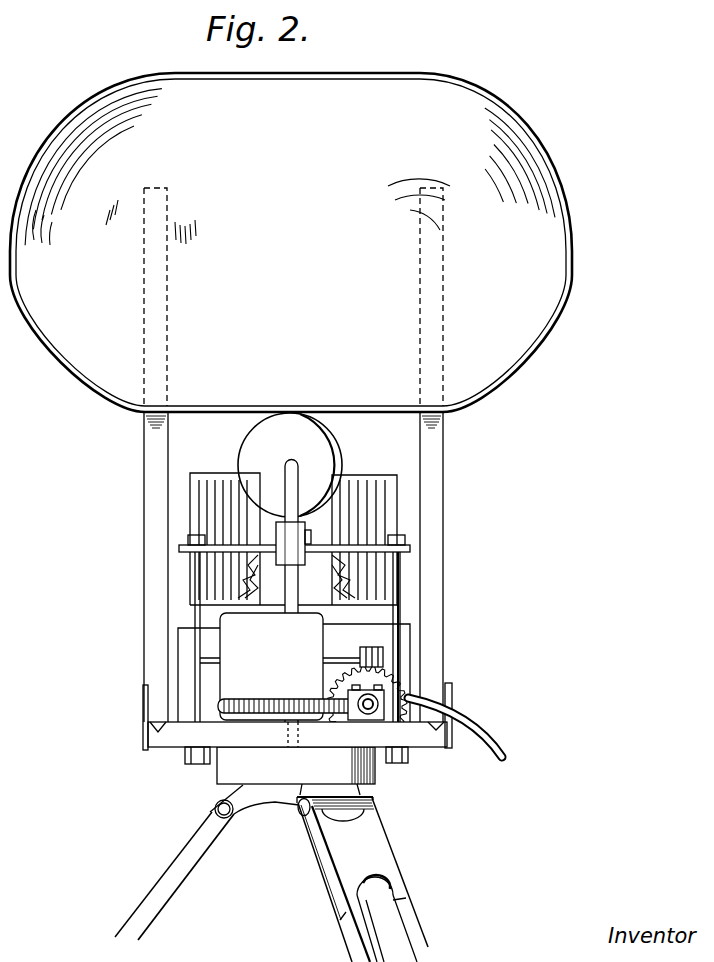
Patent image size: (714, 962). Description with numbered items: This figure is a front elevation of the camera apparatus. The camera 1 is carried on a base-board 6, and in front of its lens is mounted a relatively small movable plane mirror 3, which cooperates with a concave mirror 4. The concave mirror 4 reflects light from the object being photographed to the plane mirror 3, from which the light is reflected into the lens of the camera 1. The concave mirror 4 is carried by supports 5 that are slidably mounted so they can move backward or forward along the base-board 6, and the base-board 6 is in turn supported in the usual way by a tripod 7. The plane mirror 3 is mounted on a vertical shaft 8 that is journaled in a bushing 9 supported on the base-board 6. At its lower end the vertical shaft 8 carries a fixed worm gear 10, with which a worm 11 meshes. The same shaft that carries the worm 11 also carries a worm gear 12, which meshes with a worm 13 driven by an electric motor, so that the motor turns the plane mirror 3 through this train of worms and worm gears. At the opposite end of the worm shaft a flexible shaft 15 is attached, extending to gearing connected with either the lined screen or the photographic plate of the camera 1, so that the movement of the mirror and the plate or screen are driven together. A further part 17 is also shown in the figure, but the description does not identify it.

The camera 1 is at (375, 501).
The plane mirror 3 is at (342, 441).
The concave mirror 4 is at (540, 252).
The supports 5 is at (150, 553).
The base-board 6 is at (165, 737).
The tripod 7 is at (370, 833).
The vertical shaft 8 is at (288, 644).
The bushing 9 is at (280, 536).
The worm gear 10 is at (268, 688).
The worm 11 is at (378, 715).
The worm gear 12 is at (373, 678).
The worm 13 is at (366, 647).
The flexible shaft 15 is at (492, 739).
The bracket 17 is at (230, 648).